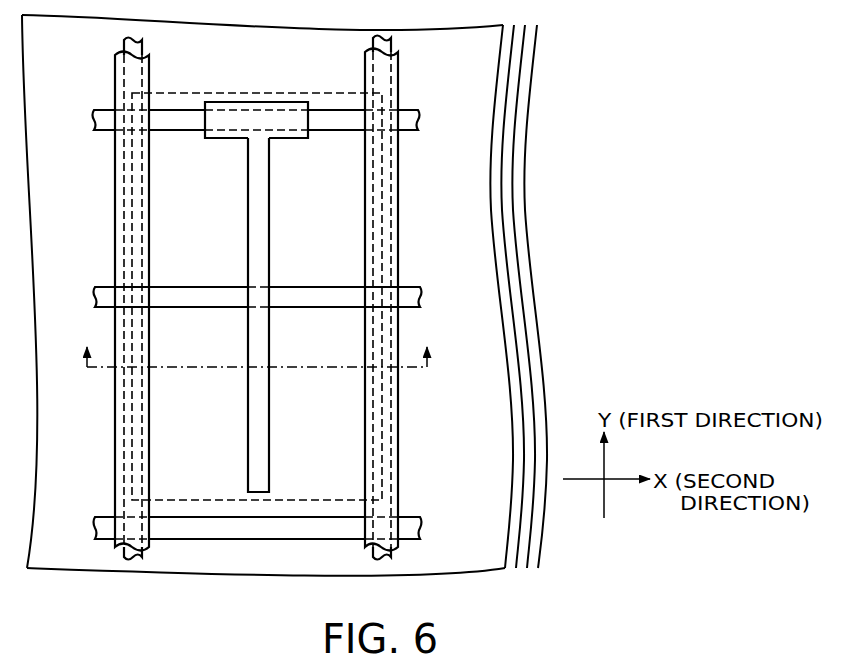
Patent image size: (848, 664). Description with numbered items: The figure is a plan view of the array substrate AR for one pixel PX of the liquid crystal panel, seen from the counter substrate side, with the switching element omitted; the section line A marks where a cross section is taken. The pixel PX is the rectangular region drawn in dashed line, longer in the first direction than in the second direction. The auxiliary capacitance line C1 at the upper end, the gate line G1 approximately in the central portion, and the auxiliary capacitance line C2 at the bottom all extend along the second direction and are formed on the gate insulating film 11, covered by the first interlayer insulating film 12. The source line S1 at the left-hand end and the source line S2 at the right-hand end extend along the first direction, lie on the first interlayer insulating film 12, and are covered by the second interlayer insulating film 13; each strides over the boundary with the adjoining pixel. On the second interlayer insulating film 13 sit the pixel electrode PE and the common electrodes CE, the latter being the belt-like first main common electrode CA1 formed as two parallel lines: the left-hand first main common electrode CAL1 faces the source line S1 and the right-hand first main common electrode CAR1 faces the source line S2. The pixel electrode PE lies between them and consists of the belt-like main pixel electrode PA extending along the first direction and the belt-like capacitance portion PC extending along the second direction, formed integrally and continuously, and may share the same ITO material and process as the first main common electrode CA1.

The array substrate AR is at (547, 296).
The gate insulating film 11 is at (517, 106).
The first interlayer insulating film 12 is at (505, 135).
The second interlayer insulating film 13 is at (493, 166).
The pixel PX is at (322, 92).
The auxiliary capacitance line C1 is at (94, 118).
The gate line G1 is at (95, 295).
The auxiliary capacitance line C2 is at (95, 527).
The common electrode CE is at (400, 73).
The source line S1 is at (138, 559).
The source line S2 is at (380, 554).
The pixel electrode PE is at (262, 266).
The capacitance portion PC is at (214, 140).
The main pixel electrode PA is at (268, 188).
The first main common electrode CA1 is at (257, 244).
The first main common electrode CAL1 is at (149, 222).
The first main common electrode CAR1 is at (365, 222).
The section line A- A is at (257, 344).